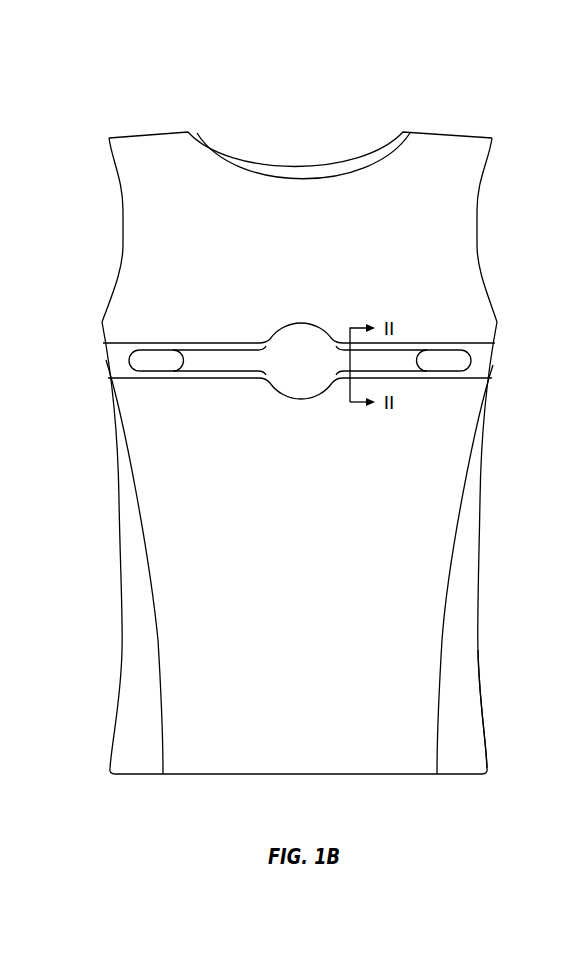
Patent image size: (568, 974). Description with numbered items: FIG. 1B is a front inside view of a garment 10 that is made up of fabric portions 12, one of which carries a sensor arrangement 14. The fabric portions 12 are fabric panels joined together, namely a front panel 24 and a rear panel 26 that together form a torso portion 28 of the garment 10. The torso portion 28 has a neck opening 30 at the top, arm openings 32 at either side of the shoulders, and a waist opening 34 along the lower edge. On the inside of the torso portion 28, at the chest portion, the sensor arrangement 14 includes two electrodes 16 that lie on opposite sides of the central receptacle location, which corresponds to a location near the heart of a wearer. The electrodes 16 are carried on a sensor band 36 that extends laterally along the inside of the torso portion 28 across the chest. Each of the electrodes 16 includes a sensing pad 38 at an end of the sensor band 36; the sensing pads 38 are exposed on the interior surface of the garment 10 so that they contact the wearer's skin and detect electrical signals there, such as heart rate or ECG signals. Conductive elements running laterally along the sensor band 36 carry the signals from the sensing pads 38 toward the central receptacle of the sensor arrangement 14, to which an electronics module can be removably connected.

The garment 10 is at (469, 105).
The fabric portions 12 is at (172, 548).
The sensor arrangement 14 is at (267, 333).
The electrodes 16 is at (172, 357).
The front panel 24 is at (410, 625).
The rear panel 26 is at (465, 685).
The torso portion 28 is at (172, 483).
The neck opening 30 is at (303, 164).
The arm openings 32 is at (120, 221).
The waist opening 34 is at (404, 763).
The sensor band 36 is at (205, 365).
The sensing pads 38 is at (145, 365).